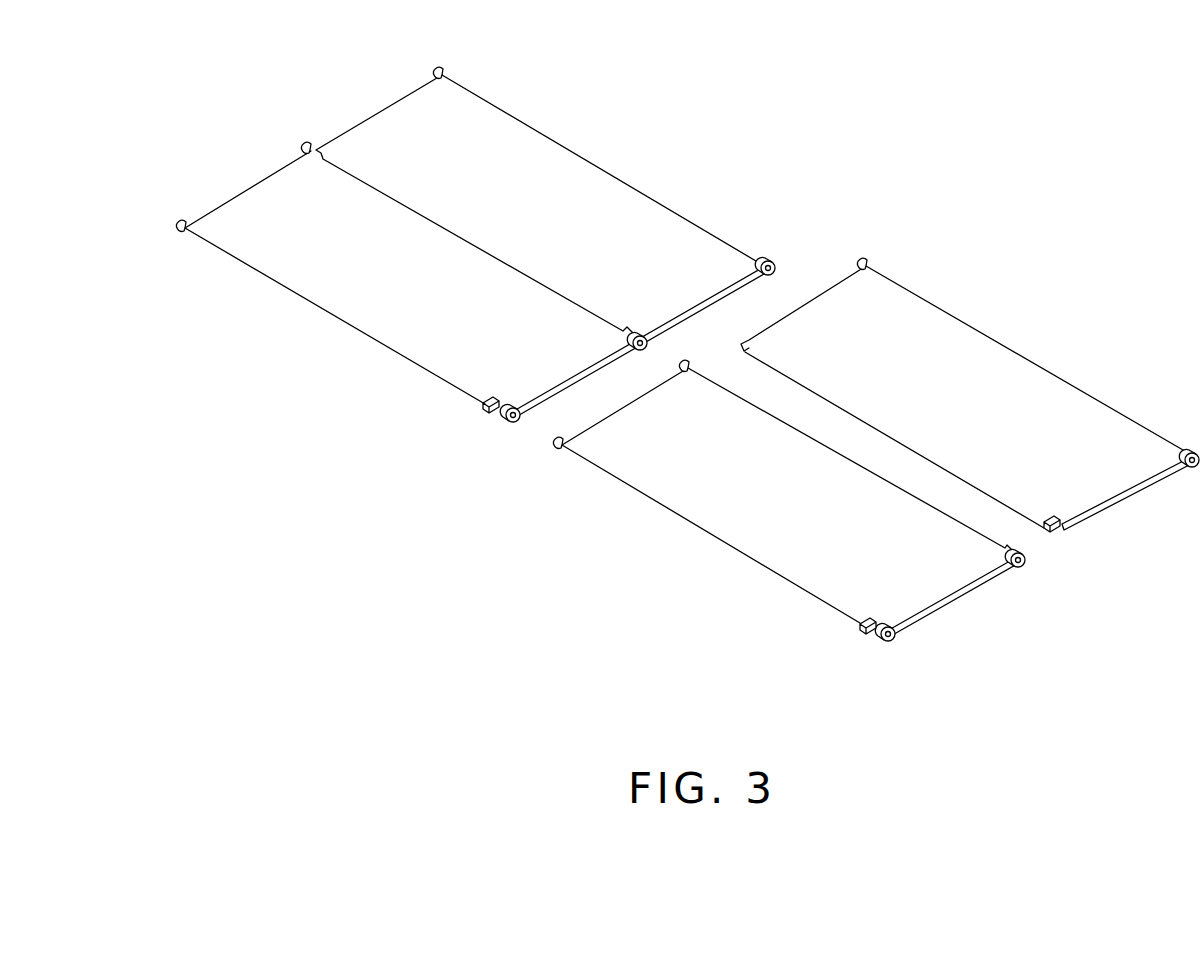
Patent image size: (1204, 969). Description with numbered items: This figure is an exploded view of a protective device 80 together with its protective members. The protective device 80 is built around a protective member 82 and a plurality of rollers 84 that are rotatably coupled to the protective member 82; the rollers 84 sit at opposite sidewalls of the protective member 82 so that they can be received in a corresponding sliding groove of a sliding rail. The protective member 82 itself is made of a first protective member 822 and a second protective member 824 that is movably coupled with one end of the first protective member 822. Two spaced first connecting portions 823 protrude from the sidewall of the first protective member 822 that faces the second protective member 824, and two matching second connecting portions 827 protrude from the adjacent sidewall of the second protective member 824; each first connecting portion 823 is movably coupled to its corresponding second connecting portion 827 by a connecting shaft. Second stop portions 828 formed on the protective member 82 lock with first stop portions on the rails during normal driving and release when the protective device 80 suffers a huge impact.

The protective device 80 is at (476, 281).
The protective member 82 is at (457, 368).
The rollers 84 is at (620, 369).
The first protective member 822 is at (925, 580).
The first connecting portion 823 is at (700, 377).
The second protective member 824 is at (1042, 368).
The second connecting portion 827 is at (1028, 513).
The second stop portion 828 is at (862, 628).